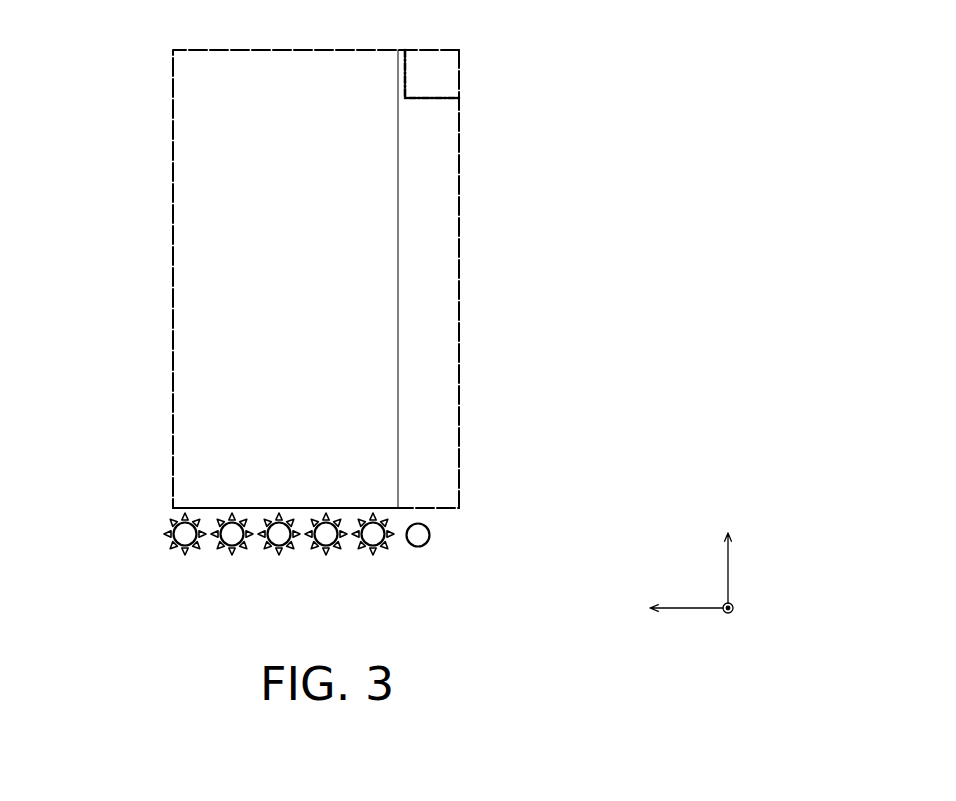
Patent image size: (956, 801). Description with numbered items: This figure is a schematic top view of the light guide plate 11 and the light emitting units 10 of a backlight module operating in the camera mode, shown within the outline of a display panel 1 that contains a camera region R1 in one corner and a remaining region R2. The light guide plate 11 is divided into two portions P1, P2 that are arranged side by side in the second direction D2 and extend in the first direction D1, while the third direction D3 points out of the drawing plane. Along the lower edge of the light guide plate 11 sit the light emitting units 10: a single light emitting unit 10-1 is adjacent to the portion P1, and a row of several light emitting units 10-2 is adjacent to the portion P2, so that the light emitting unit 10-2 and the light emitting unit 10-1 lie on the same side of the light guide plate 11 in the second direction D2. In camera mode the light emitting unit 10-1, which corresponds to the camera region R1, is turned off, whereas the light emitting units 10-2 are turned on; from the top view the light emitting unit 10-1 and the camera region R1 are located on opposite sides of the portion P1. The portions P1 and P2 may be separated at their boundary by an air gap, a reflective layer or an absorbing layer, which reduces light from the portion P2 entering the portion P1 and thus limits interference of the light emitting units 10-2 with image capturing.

The display panel 1 is at (398, 122).
The camera region R1 is at (433, 99).
The second region R2 is at (459, 180).
The portion P1 is at (442, 322).
The portion P2 is at (380, 360).
The light guide plate 11 is at (376, 279).
The light emitting units 10 is at (306, 585).
The light emitting unit 10-1 is at (444, 549).
The light emitting unit 10-2 is at (361, 570).
The first direction D1 is at (733, 551).
The second direction D2 is at (668, 609).
The third direction D3 is at (746, 622).